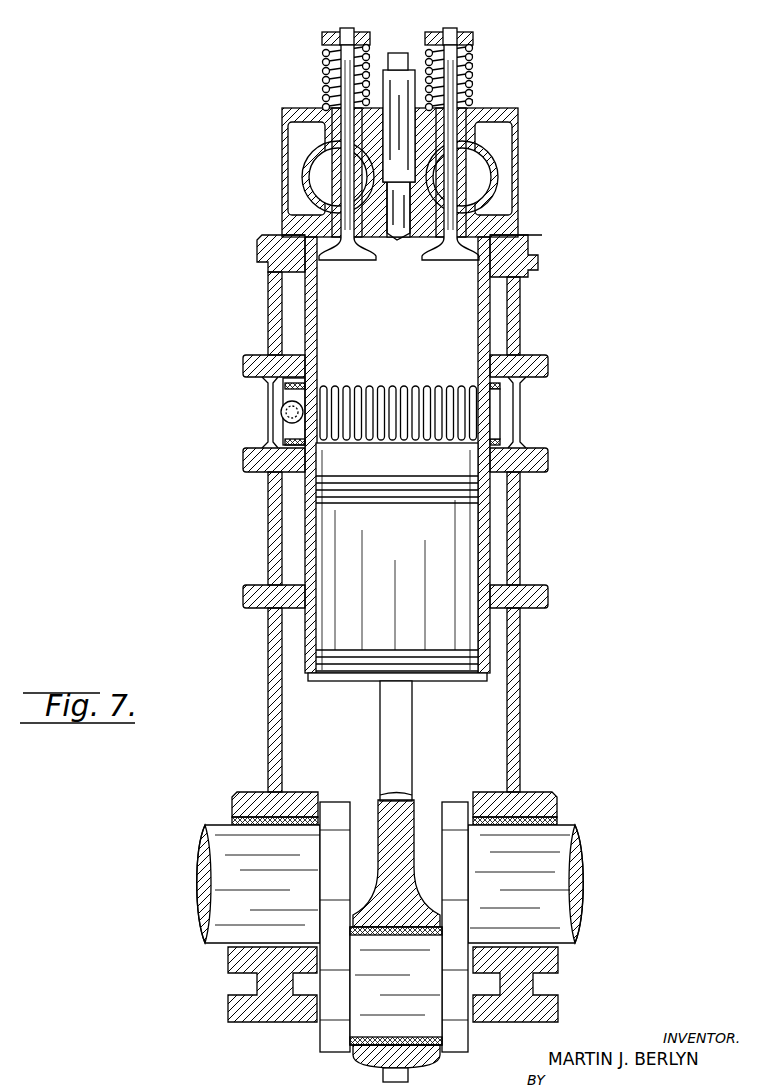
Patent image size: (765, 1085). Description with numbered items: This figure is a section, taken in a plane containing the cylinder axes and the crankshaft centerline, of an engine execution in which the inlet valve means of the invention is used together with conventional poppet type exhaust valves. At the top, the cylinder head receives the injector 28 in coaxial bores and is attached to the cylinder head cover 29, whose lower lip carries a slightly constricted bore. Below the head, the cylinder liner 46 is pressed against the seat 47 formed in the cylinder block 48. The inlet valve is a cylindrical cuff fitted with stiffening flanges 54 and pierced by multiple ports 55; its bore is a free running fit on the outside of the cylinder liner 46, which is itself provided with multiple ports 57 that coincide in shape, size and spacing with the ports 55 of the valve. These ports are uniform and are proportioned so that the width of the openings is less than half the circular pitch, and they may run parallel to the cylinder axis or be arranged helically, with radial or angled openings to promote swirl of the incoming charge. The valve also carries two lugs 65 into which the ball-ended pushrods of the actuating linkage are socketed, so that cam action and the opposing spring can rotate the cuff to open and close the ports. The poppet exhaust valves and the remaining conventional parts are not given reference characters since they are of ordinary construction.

The injector 28 is at (408, 53).
The cylinder head cover 29 is at (518, 203).
The cylinder liner 46 is at (478, 310).
The seat 47 is at (297, 252).
The cylinder block 48 is at (536, 263).
The stiffening flanges 54 is at (290, 388).
The ports 55 is at (500, 420).
The ports 57 is at (398, 386).
The lugs 65 is at (281, 412).